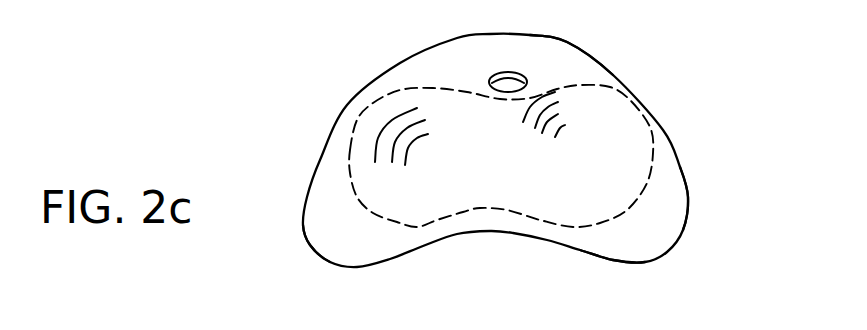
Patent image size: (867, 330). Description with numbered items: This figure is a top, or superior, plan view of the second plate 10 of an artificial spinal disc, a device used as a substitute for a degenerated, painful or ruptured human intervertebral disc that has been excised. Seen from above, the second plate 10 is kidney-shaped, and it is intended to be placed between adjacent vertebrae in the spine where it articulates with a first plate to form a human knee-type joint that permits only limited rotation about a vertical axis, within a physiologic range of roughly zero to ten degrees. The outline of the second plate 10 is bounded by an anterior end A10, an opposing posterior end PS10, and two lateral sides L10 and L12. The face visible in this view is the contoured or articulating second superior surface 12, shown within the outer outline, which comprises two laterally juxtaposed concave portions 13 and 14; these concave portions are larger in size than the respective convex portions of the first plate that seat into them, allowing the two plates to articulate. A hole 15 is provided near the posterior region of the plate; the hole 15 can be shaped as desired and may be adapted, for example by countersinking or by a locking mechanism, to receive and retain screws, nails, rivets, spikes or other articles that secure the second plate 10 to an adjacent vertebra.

The second plate 10 is at (290, 219).
The second superior surface 12 is at (335, 163).
The concave portion 13 is at (415, 165).
The concave portion 14 is at (560, 128).
The hole 15 is at (518, 73).
The posterior end PS10 is at (567, 42).
The lateral side L10 is at (308, 240).
The lateral side L12 is at (688, 208).
The anterior end A10 is at (648, 261).